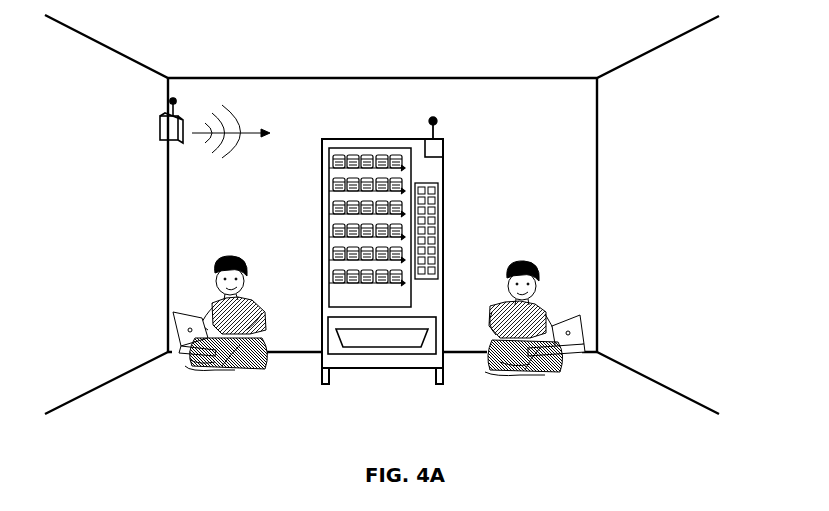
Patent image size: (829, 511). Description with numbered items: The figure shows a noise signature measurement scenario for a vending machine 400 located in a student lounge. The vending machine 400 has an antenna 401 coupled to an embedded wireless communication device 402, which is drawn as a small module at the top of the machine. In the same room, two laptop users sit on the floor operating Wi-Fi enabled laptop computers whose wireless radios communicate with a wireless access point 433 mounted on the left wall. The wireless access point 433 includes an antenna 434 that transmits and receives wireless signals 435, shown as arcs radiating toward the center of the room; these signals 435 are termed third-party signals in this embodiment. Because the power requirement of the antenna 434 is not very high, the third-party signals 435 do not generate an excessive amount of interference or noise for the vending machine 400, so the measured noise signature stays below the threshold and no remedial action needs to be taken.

The vending machine 400 is at (373, 138).
The antenna 401 is at (438, 117).
The embedded wireless communication device 402 is at (443, 147).
The wireless access point 433 is at (162, 118).
The antenna 434 is at (176, 98).
The wireless signals 435 is at (222, 158).